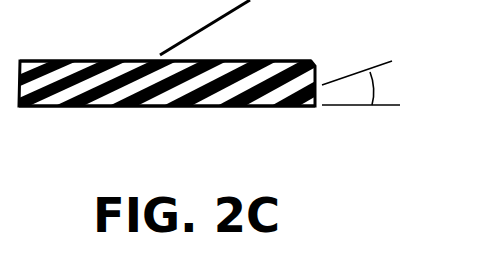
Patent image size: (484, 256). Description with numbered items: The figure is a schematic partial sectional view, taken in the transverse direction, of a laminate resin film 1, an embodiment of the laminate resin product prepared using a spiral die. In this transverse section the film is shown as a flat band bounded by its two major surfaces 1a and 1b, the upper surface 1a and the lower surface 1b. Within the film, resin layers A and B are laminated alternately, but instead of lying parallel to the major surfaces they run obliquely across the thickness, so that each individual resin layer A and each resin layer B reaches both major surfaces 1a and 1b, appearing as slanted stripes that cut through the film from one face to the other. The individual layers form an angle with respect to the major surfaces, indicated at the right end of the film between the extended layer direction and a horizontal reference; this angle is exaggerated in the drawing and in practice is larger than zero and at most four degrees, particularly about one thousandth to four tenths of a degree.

The laminate resin film 1 is at (188, 89).
The major surface 1a is at (143, 60).
The major surface 1b is at (142, 107).
The resin layer A is at (167, 83).
The resin layer B is at (188, 83).